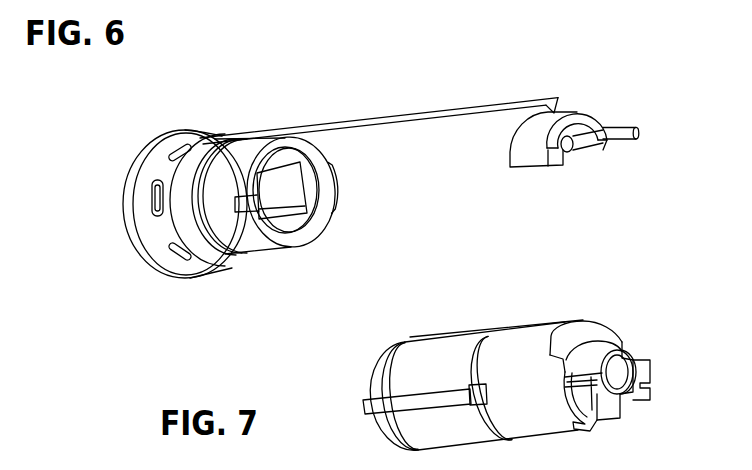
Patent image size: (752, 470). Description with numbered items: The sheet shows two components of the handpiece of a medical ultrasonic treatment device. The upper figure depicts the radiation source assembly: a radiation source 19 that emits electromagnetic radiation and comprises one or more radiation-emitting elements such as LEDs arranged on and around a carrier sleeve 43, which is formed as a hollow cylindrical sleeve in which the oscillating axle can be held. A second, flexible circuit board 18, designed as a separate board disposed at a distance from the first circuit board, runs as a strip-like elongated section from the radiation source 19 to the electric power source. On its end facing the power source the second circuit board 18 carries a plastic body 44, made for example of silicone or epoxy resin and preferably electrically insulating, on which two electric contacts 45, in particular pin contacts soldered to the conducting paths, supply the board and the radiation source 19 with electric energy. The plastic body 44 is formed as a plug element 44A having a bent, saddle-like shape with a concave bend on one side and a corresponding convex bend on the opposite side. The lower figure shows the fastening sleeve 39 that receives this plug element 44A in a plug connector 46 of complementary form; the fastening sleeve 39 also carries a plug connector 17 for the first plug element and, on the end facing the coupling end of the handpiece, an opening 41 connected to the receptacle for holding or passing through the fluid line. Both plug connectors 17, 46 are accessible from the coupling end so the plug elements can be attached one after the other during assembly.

In FIG. 7, the plug connector 17 is at (603, 422).
In FIG. 6, the second circuit board 18 is at (438, 103).
In FIG. 6, the radiation source 19 is at (187, 128).
In FIG. 7, the fastening sleeve 39 is at (529, 355).
In FIG. 7, the opening 41 is at (612, 365).
In FIG. 6, the carrier sleeve 43 is at (305, 257).
In FIG. 6, the plastic body 44 is at (606, 119).
In FIG. 6, the plug element 44A is at (600, 105).
In FIG. 6, the electric contacts 45 is at (635, 145).
In FIG. 7, the plug connector 46 is at (603, 325).